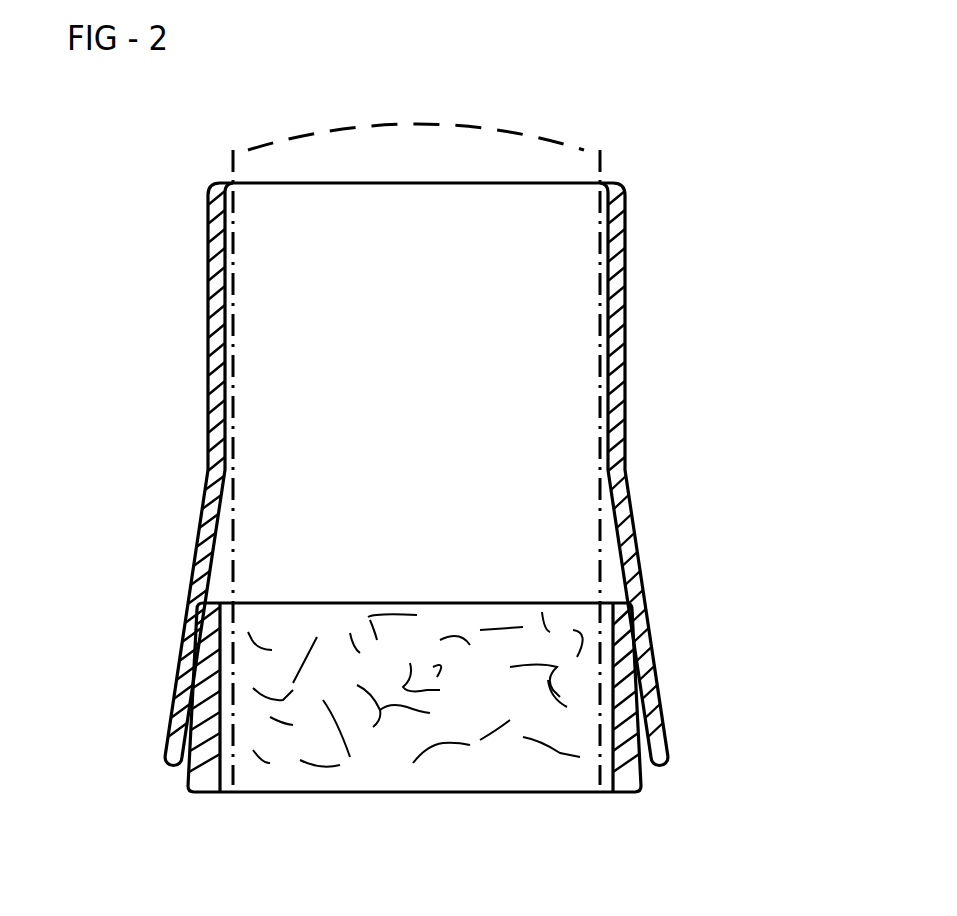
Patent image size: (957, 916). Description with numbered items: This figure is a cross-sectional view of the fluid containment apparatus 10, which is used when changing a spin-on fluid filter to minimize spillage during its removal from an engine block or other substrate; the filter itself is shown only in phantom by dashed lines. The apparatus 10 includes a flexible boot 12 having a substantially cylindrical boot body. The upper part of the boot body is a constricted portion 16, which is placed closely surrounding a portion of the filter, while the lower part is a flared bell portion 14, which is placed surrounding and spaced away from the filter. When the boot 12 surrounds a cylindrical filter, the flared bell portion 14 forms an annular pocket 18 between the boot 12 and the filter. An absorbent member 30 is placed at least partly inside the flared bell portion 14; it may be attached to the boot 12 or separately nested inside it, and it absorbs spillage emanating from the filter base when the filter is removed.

The fluid containment apparatus 10 is at (438, 454).
The flexible boot 12 is at (634, 406).
The flared bell portion 14 is at (174, 668).
The constricted portion 16 is at (207, 305).
The annular pocket 18 is at (662, 700).
The absorbent member 30 is at (541, 802).